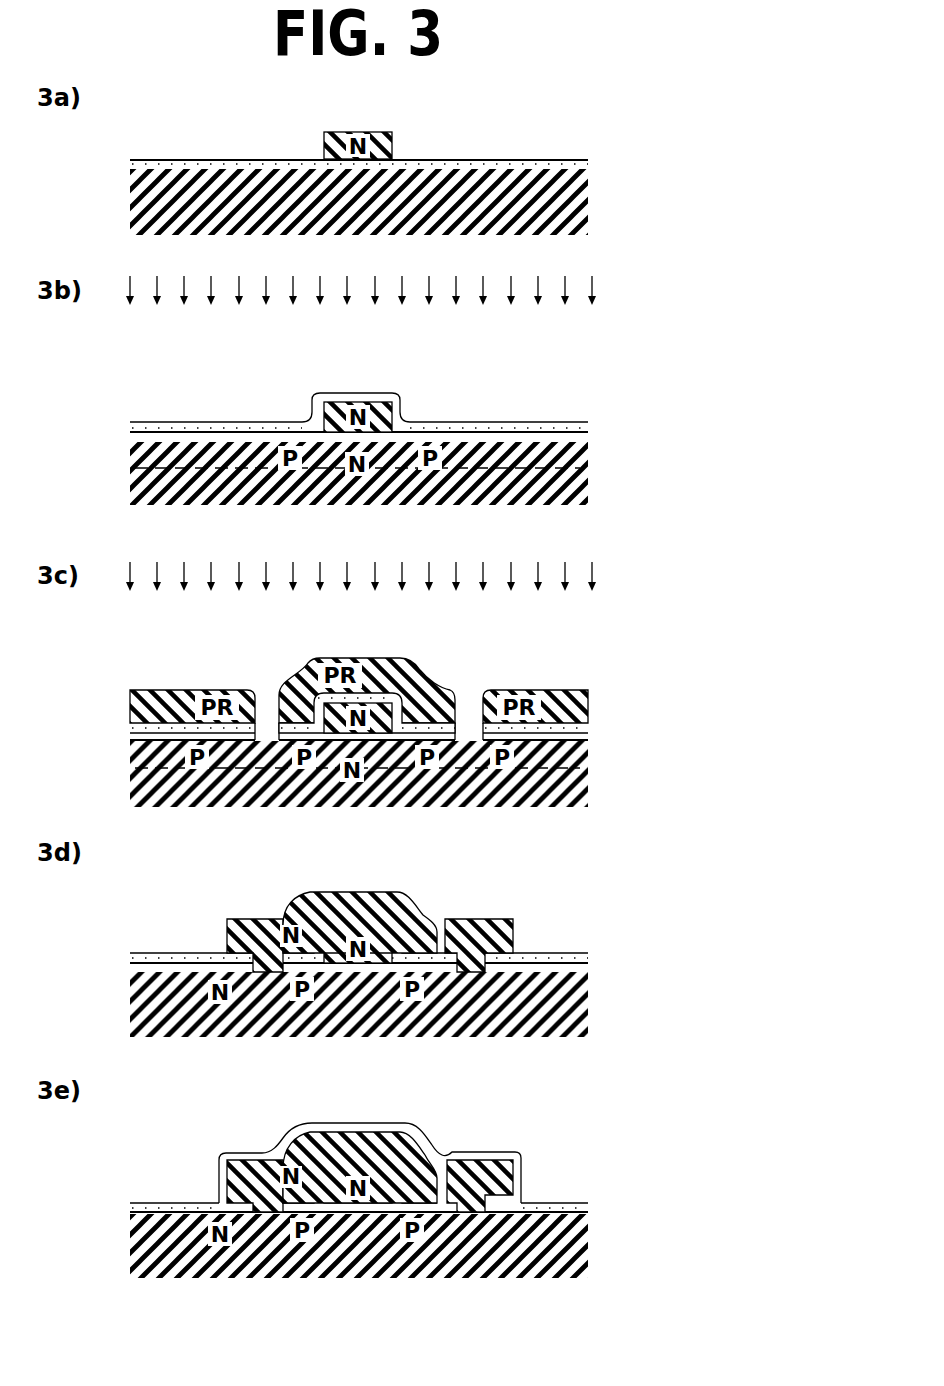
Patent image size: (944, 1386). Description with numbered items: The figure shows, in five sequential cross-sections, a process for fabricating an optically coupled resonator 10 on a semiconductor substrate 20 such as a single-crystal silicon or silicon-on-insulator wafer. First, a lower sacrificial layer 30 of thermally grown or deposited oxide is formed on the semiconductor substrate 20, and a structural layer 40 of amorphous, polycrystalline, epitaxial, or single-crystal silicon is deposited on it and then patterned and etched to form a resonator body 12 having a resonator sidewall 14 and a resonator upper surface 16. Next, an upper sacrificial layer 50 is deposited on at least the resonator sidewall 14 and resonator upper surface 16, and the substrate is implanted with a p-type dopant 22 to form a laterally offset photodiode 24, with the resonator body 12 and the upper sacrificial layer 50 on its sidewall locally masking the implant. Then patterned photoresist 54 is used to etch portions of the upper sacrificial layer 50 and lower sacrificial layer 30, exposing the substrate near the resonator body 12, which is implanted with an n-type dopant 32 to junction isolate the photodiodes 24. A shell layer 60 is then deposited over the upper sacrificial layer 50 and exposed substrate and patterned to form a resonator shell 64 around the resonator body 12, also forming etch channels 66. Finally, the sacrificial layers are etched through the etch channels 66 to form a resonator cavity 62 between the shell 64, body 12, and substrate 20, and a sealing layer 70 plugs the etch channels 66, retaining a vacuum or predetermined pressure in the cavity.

The optically coupled resonator 10 is at (190, 127).
The resonator body 12 is at (390, 132).
The resonator sidewall 14 is at (393, 140).
The resonator upper surface 16 is at (340, 132).
The semiconductor substrate 20 is at (588, 184).
The p-type dopant 22 is at (594, 284).
The laterally offset photodiode 24 is at (448, 470).
The lower sacrificial layer 30 is at (588, 162).
The n-type dopant 32 is at (594, 568).
The structural layer 40 is at (393, 157).
The upper sacrificial layer 50 is at (588, 420).
The patterned photoresist 54 is at (588, 702).
The shell layer 60 is at (513, 930).
The resonator cavity 62 is at (288, 1160).
The resonator shell 64 is at (292, 918).
The etch channels 66 is at (442, 920).
The sealing layer 70 is at (488, 1153).